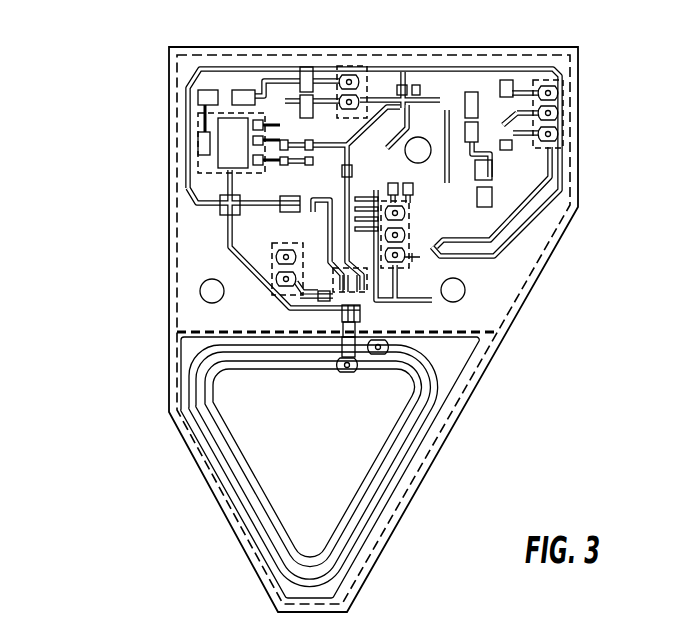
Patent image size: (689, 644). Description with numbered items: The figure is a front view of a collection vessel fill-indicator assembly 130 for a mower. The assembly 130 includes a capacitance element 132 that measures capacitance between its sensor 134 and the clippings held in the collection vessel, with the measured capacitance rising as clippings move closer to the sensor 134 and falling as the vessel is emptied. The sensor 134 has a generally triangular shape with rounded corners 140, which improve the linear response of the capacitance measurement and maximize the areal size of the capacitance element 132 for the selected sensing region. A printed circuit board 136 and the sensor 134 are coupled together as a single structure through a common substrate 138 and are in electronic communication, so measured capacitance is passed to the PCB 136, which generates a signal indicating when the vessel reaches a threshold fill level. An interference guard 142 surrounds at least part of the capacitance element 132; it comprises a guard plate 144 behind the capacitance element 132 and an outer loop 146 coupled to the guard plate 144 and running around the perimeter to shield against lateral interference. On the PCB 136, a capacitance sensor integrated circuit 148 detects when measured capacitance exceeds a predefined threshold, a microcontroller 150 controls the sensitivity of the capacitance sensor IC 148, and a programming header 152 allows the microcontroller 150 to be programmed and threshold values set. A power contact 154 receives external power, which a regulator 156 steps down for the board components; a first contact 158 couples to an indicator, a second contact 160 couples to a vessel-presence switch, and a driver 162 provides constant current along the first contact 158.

The assembly 130 is at (117, 180).
The capacitance element 132 is at (197, 460).
The sensor 134 is at (417, 377).
The printed circuit board 136 is at (542, 264).
The common substrate 138 is at (180, 305).
The corners 140 is at (208, 390).
The interference guard 142 is at (427, 447).
The guard plate 144 is at (333, 521).
The outer loop 146 is at (392, 490).
The capacitance sensor integrated circuit 148 is at (372, 322).
The microcontroller 150 is at (312, 188).
The programming header 152 is at (412, 257).
The power contact 154 is at (345, 68).
The regulator 156 is at (200, 125).
The first contact 158 is at (547, 80).
The second contact 160 is at (272, 268).
The driver 162 is at (463, 213).